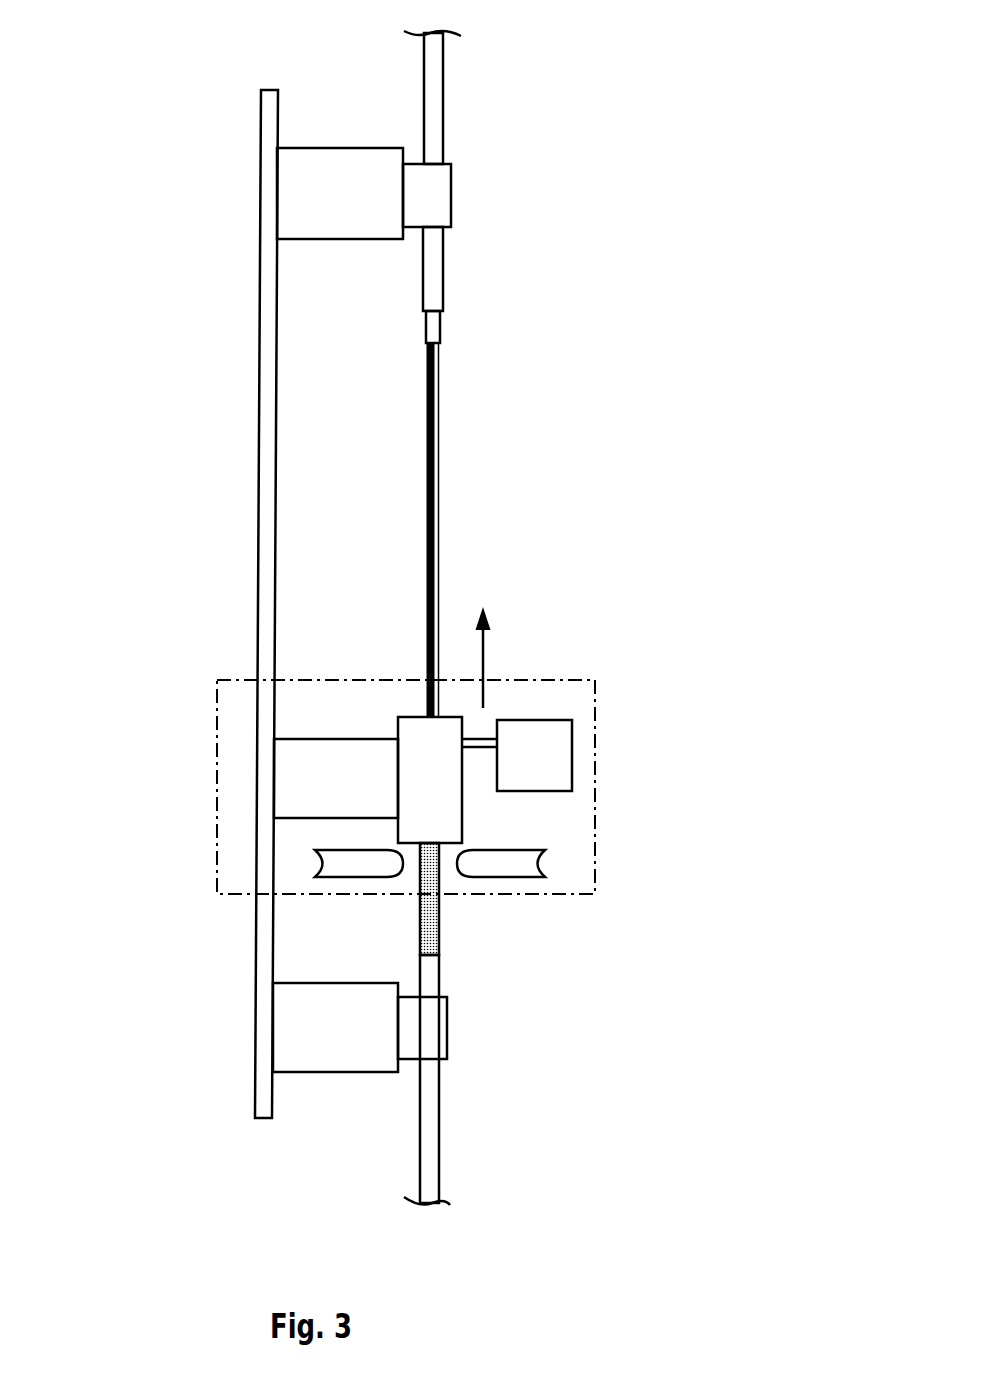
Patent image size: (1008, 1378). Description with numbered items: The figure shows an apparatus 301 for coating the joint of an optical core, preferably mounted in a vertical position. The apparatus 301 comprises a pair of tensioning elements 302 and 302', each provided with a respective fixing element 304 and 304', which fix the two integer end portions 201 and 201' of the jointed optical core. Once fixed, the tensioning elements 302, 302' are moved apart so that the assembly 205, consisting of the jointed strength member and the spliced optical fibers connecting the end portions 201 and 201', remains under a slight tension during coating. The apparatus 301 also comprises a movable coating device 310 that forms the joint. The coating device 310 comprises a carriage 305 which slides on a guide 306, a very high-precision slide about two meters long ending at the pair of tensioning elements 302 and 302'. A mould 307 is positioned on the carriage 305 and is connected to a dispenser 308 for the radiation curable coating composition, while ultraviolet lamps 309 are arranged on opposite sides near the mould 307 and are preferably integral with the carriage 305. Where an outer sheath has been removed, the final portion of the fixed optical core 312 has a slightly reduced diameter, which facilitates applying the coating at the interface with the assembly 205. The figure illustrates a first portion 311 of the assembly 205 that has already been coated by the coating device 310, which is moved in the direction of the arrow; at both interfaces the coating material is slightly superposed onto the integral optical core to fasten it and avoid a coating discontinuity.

The end portion of optical core section 201 is at (519, 97).
The end portion of optical core section 201' is at (529, 1086).
The assembly 205 is at (437, 515).
The apparatus 301 is at (610, 342).
The tensioning element 302 is at (446, 180).
The tensioning element 302' is at (435, 1056).
The fixing element 304 is at (562, 188).
The fixing element 304' is at (525, 1028).
The carriage 305 is at (320, 790).
The guide 306 is at (265, 423).
The mould 307 is at (442, 800).
The dispenser 308 is at (530, 750).
The ultraviolet lamps 309 is at (507, 870).
The coating device 310 is at (547, 693).
The first portion of the assembly 311 is at (420, 915).
The final portion of the fixed optical core 312 is at (435, 333).